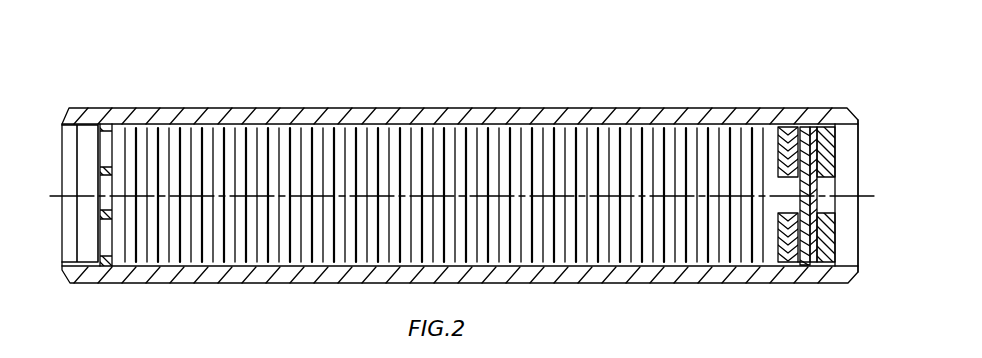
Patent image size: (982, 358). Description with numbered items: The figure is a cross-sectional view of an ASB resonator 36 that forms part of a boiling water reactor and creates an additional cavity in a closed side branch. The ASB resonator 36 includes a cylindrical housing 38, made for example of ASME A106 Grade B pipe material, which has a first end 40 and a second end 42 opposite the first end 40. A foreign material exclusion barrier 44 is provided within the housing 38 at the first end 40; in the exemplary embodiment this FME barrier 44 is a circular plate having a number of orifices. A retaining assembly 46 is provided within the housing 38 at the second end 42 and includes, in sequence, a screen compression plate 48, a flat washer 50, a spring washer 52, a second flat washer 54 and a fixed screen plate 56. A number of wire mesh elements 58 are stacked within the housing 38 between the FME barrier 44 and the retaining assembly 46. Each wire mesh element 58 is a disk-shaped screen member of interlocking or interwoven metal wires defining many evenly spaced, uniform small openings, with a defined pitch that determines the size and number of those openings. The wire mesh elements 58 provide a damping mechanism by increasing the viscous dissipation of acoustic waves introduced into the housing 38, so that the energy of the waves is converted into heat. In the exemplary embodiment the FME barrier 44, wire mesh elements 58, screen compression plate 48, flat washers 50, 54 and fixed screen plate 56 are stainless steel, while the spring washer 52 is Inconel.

The ASB resonator 36 is at (515, 88).
The cylindrical housing 38 is at (336, 108).
The first end 40 is at (72, 107).
The second end 42 is at (854, 110).
The foreign material exclusion barrier 44 is at (110, 123).
The retaining assembly 46 is at (795, 267).
The screen compression plate 48 is at (780, 124).
The flat washer 50 is at (798, 124).
The spring washer 52 is at (808, 124).
The flat washer 54 is at (822, 124).
The fixed screen plate 56 is at (838, 156).
The wire mesh elements 58 is at (268, 130).